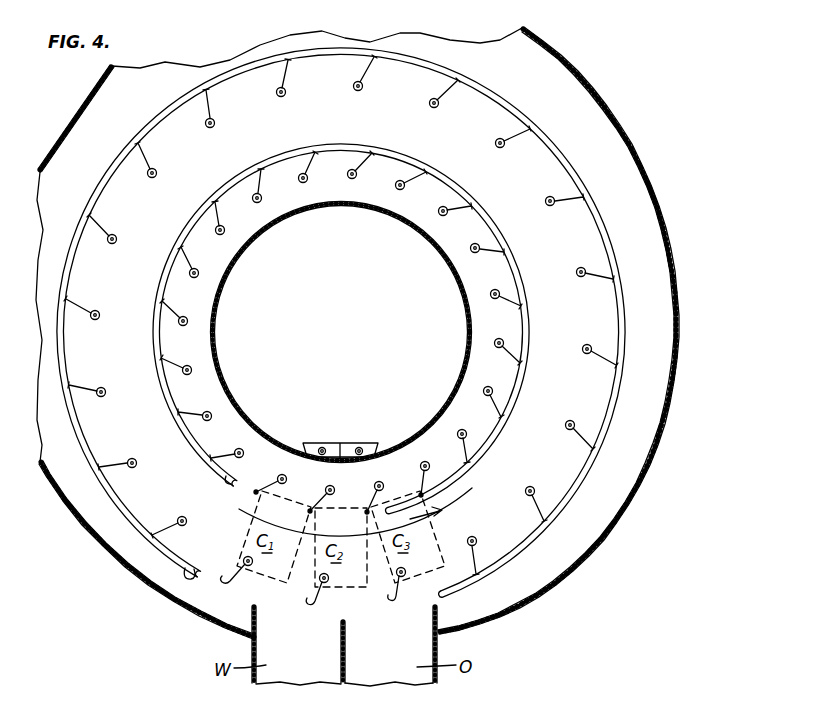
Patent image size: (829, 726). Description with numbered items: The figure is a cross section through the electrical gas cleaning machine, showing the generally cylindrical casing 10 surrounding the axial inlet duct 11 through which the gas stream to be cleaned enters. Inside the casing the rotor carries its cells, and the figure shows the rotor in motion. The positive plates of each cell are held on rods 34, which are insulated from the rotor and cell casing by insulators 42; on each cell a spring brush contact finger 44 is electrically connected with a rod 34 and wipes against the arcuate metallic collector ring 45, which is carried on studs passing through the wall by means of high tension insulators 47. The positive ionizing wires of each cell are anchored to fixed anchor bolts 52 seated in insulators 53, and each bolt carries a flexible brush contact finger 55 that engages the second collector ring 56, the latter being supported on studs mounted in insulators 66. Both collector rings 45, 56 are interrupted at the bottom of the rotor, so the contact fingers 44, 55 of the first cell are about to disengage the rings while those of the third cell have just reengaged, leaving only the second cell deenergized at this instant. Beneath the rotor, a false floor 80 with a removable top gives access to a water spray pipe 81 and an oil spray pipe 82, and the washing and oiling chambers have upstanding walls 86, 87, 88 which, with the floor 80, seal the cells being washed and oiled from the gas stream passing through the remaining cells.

The casing 10 is at (665, 405).
The axial inlet duct 11 is at (223, 370).
The rods 34 is at (183, 517).
The insulators 42 is at (175, 515).
The brush contact finger 44 is at (153, 532).
The collector ring 45 is at (163, 553).
The high tension insulators 47 is at (182, 574).
The anchor bolt 52 is at (186, 364).
The insulator 53 is at (184, 374).
The brush contact finger 55 is at (168, 365).
The second collector ring 56 is at (162, 392).
The insulators 66 is at (155, 288).
The false floor 80 is at (337, 433).
The water spray pipe 81 is at (313, 442).
The oil spray pipe 82 is at (363, 442).
The upstanding wall 86 is at (256, 633).
The upstanding wall 87 is at (341, 655).
The upstanding wall 88 is at (433, 628).